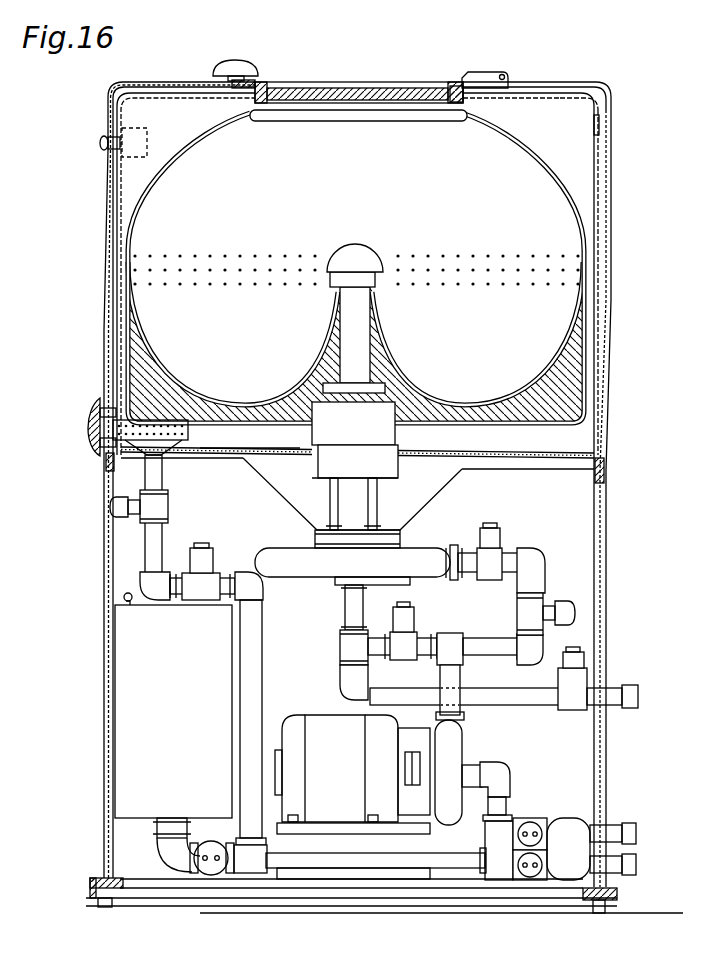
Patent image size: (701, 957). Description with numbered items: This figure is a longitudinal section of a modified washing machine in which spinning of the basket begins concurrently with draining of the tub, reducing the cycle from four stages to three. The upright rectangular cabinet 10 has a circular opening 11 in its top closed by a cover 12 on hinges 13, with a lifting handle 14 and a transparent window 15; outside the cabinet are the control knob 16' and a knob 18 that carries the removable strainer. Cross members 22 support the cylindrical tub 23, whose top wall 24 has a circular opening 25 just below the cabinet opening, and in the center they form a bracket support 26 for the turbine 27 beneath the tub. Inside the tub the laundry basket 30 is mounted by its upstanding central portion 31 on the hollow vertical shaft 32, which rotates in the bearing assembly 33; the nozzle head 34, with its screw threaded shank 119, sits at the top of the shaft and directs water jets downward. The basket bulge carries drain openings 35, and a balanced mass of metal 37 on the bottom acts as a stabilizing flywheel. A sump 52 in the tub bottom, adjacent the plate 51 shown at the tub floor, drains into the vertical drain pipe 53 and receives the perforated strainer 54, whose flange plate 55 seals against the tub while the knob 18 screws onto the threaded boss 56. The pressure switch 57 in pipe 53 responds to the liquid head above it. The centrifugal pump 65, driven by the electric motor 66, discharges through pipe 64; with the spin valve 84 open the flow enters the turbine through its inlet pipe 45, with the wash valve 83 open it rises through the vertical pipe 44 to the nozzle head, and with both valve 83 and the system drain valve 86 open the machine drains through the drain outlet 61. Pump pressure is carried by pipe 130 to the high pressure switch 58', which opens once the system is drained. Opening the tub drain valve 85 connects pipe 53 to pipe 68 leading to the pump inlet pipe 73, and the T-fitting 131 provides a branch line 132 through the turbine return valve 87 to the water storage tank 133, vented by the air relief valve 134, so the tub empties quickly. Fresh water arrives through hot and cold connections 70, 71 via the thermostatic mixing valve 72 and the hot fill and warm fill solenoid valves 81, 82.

The cabinet 10 is at (613, 246).
The circular opening 11 is at (456, 86).
The cover 12 is at (345, 82).
The hinges 13 is at (500, 72).
The lifting handle 14 is at (236, 60).
The transparent window 15 is at (290, 88).
The control knob 16' is at (88, 147).
The knob 18 is at (98, 414).
The cross members 22 is at (537, 462).
The tub 23 is at (600, 174).
The top wall 24 is at (588, 97).
The circular opening 25 is at (520, 88).
The bracket support 26 is at (275, 480).
The turbine 27 is at (268, 543).
The laundry basket 30 is at (545, 170).
The upstanding central portion 31 is at (376, 300).
The hollow vertical shaft 32 is at (366, 340).
The bearing assembly 33 is at (396, 437).
The nozzle head 34 is at (352, 244).
The openings 35 is at (133, 284).
The balanced mass of metal 37 is at (565, 395).
The vertical pipe 44 is at (344, 610).
The inlet pipe 45 is at (462, 552).
The plate 51 is at (290, 453).
The sump 52 is at (190, 434).
The tub drain pipe 53 is at (164, 470).
The perforated strainer 54 is at (98, 441).
The flange plate 55 is at (96, 404).
The boss 56 is at (104, 452).
The high pressure fill switch 57 is at (110, 506).
The high pressure switch 58' is at (588, 607).
The drain outlet 61 is at (638, 696).
The discharge pipe 64 is at (460, 683).
The centrifugal pump 65 is at (455, 740).
The electric motor 66 is at (342, 792).
The pipe 68 is at (418, 870).
The hot water supply pipe connection 70 is at (636, 828).
The cold water supply pipe connection 71 is at (636, 864).
The thermostatic mixing valve 72 is at (568, 832).
The inlet pipe 73 is at (485, 772).
The hot fill solenoid valve 81 is at (528, 820).
The warm fill solenoid valve 82 is at (530, 880).
The wash valve 83 is at (408, 620).
The spin valve 84 is at (492, 540).
The tub drain valve 85 is at (204, 547).
The system drain valve 86 is at (588, 672).
The turbine return valve 87 is at (207, 876).
The screw threaded shank 119 is at (334, 282).
The pipe 130 is at (490, 638).
The T-fitting 131 is at (250, 874).
The branch line 132 is at (157, 833).
The water storage tank 133 is at (182, 697).
The air relief valve 134 is at (122, 597).